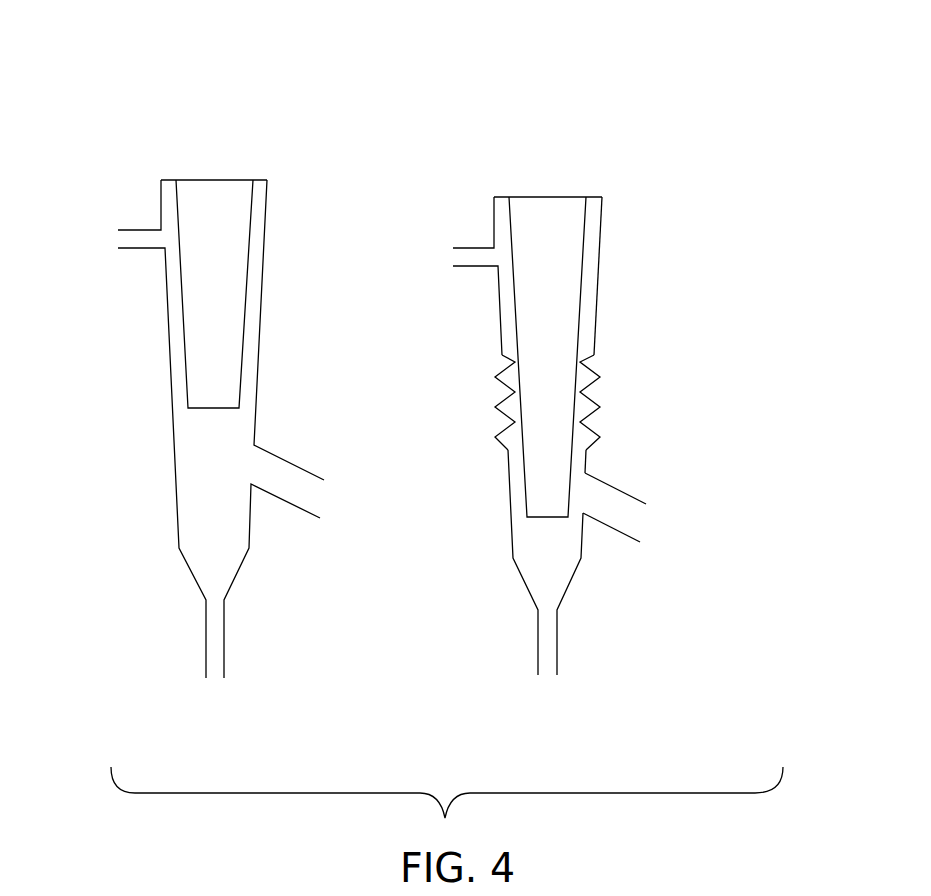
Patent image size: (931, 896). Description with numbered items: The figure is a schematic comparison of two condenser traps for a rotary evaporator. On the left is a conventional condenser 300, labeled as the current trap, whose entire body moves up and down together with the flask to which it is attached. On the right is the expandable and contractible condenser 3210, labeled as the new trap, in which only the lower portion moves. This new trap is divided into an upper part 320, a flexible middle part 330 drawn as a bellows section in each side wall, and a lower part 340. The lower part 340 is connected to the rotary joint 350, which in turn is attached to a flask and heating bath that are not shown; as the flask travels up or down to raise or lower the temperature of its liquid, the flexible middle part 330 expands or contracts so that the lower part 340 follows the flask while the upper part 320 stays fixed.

The conventional condenser 300 is at (280, 108).
The new trap 3210 is at (614, 126).
The upper part 320 is at (685, 197).
The flexible middle part 330 is at (685, 350).
The lower part 340 is at (685, 475).
The rotary joint 350 is at (614, 565).